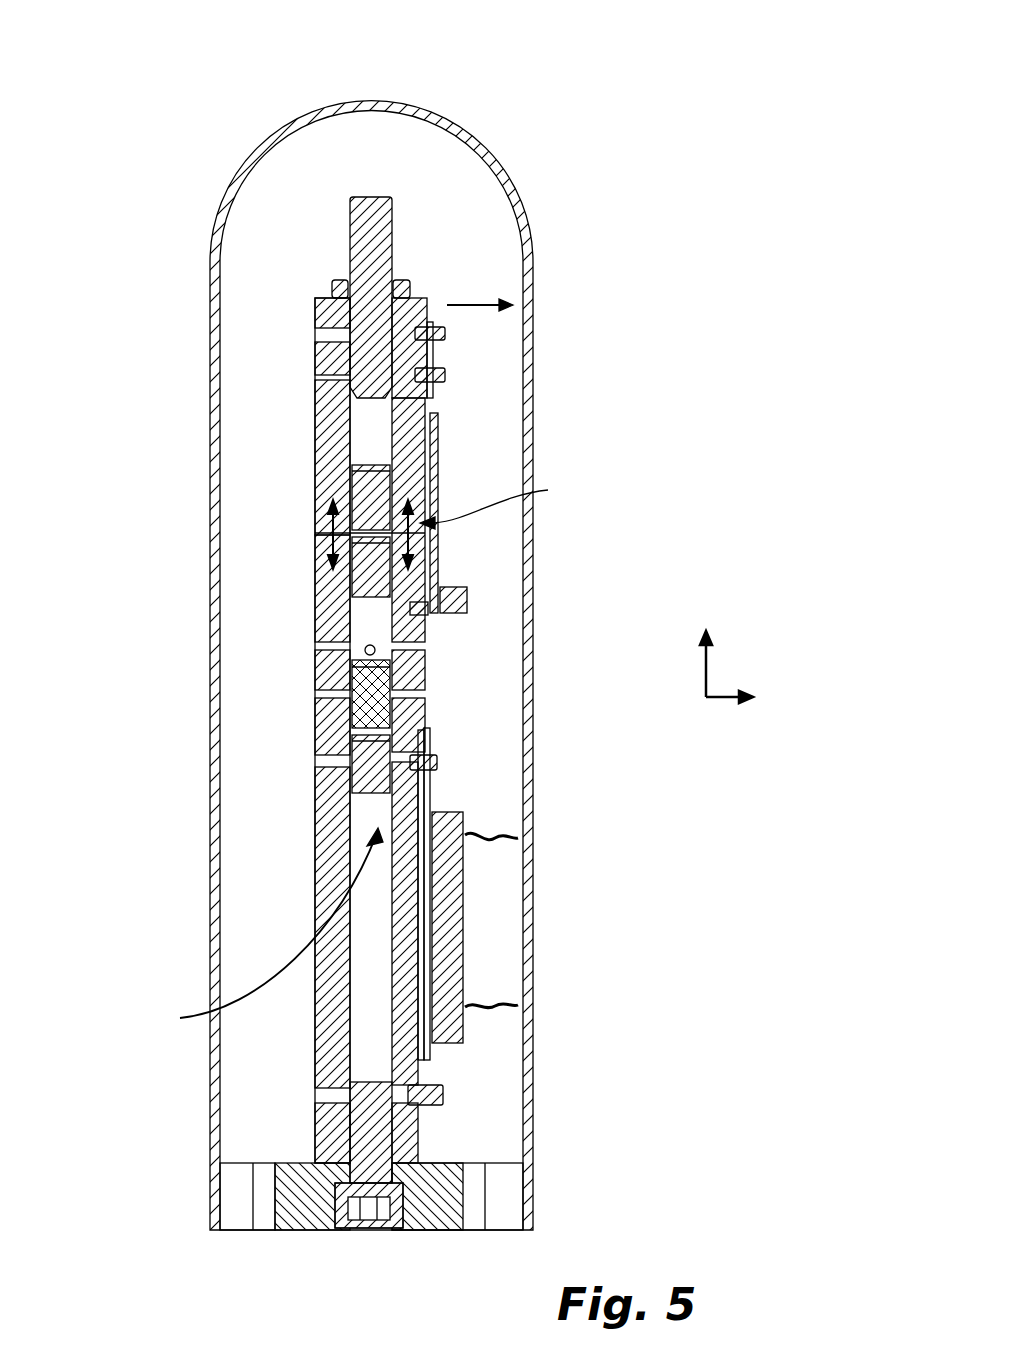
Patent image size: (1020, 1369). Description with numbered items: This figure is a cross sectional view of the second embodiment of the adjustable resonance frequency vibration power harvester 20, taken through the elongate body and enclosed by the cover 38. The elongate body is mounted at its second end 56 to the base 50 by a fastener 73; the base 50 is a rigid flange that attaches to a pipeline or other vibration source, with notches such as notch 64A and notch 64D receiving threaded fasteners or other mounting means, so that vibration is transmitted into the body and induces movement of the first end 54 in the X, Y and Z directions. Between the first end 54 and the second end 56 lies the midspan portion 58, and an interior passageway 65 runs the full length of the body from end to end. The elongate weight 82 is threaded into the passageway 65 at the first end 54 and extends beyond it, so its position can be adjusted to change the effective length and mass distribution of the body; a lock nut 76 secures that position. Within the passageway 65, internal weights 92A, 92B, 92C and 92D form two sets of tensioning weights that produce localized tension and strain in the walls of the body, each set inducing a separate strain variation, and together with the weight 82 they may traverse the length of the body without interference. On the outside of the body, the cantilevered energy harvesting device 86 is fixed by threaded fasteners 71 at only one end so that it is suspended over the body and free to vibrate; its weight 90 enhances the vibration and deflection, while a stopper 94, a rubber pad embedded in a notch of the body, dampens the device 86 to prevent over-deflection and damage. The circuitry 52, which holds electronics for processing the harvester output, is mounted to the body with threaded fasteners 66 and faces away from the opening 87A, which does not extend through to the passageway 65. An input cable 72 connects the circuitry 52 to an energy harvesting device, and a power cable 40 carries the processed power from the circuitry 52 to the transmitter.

The adjustable resonance frequency vibration power harvester 20 is at (585, 93).
The cover 38 is at (425, 110).
The first end 54 is at (328, 312).
The elongate weight 82 is at (382, 223).
The lock nut 76 is at (415, 292).
The threaded fasteners 71 is at (445, 375).
The energy harvesting device 86 is at (437, 443).
The weight 90 is at (467, 597).
The stopper 94 is at (430, 612).
The threaded fasteners 66 is at (437, 760).
The input cable 72 is at (500, 835).
The circuitry 52 is at (453, 888).
The power cable 40 is at (500, 1005).
The opening 87A is at (424, 1052).
The weight 92A is at (365, 497).
The weight 92B is at (355, 572).
The weight 92C is at (358, 660).
The weight 92D is at (375, 752).
The midspan portion 58 is at (325, 705).
The interior passageway 65 is at (265, 930).
The second end 56 is at (333, 1140).
The notch 64A is at (510, 1172).
The notch 64D is at (240, 1200).
The base 50 is at (310, 1207).
The fastener 73 is at (378, 1183).